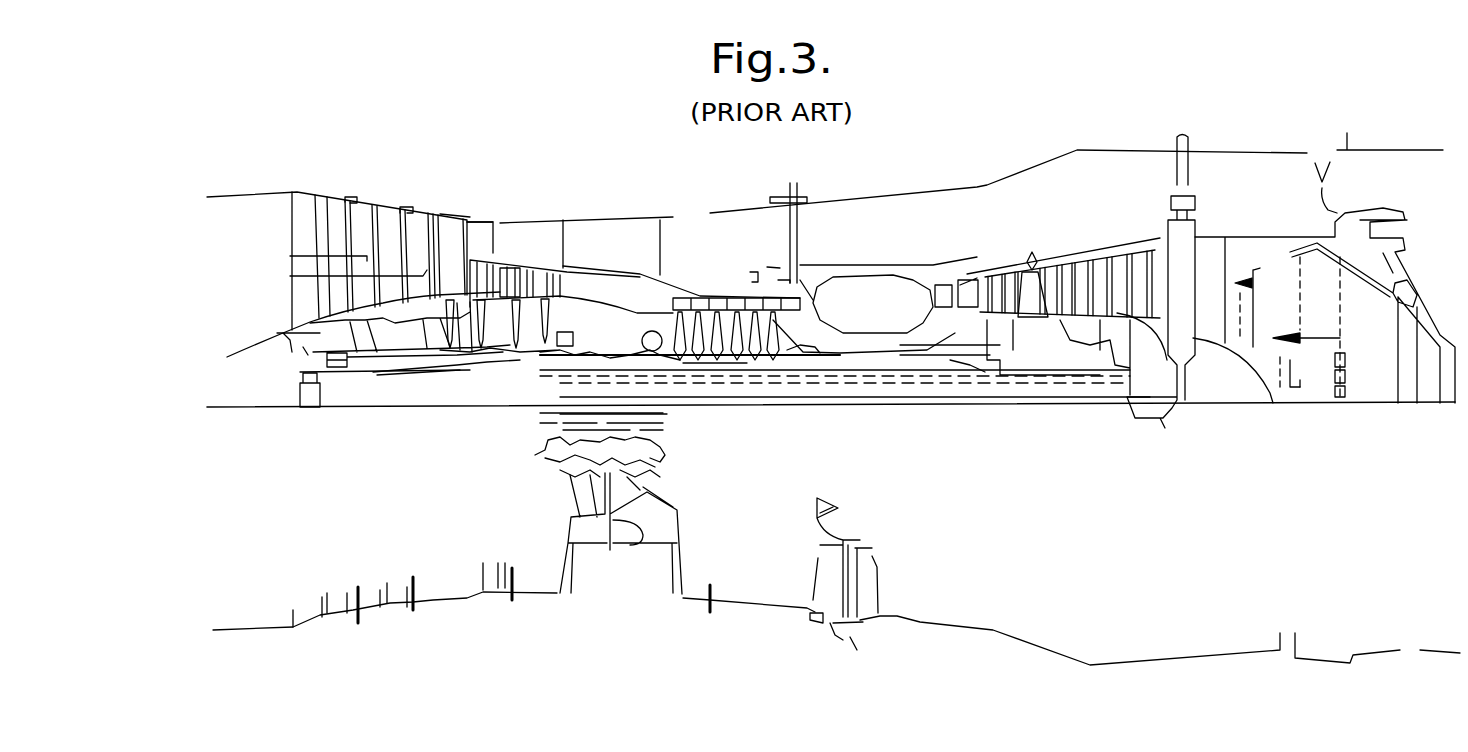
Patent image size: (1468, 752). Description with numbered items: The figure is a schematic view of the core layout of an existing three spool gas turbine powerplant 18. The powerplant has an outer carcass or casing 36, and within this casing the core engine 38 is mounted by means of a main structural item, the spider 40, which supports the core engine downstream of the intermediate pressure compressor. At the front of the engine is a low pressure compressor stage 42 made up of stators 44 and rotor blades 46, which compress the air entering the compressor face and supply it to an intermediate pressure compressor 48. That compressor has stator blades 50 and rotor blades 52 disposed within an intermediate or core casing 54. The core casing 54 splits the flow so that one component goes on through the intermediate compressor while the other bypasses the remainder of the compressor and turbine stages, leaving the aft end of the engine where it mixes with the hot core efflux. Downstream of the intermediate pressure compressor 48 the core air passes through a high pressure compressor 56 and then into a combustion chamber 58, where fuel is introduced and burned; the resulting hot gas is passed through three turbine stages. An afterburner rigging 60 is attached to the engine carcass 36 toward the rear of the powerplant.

The gas turbine powerplant 18 is at (208, 380).
The outer carcass or casing 36 is at (978, 177).
The core engine 38 is at (960, 255).
The spider 40 is at (605, 237).
The low pressure compressor stage 42 is at (486, 130).
The stators 44 is at (443, 215).
The rotor blades 46 is at (310, 267).
The intermediate pressure compressor 48 is at (507, 235).
The stator blades 50 is at (530, 280).
The rotor blades 52 is at (521, 272).
The intermediate or core casing 54 is at (643, 290).
The high pressure compressor 56 is at (710, 292).
The combustion chamber 58 is at (865, 292).
The afterburner rigging 60 is at (1297, 333).